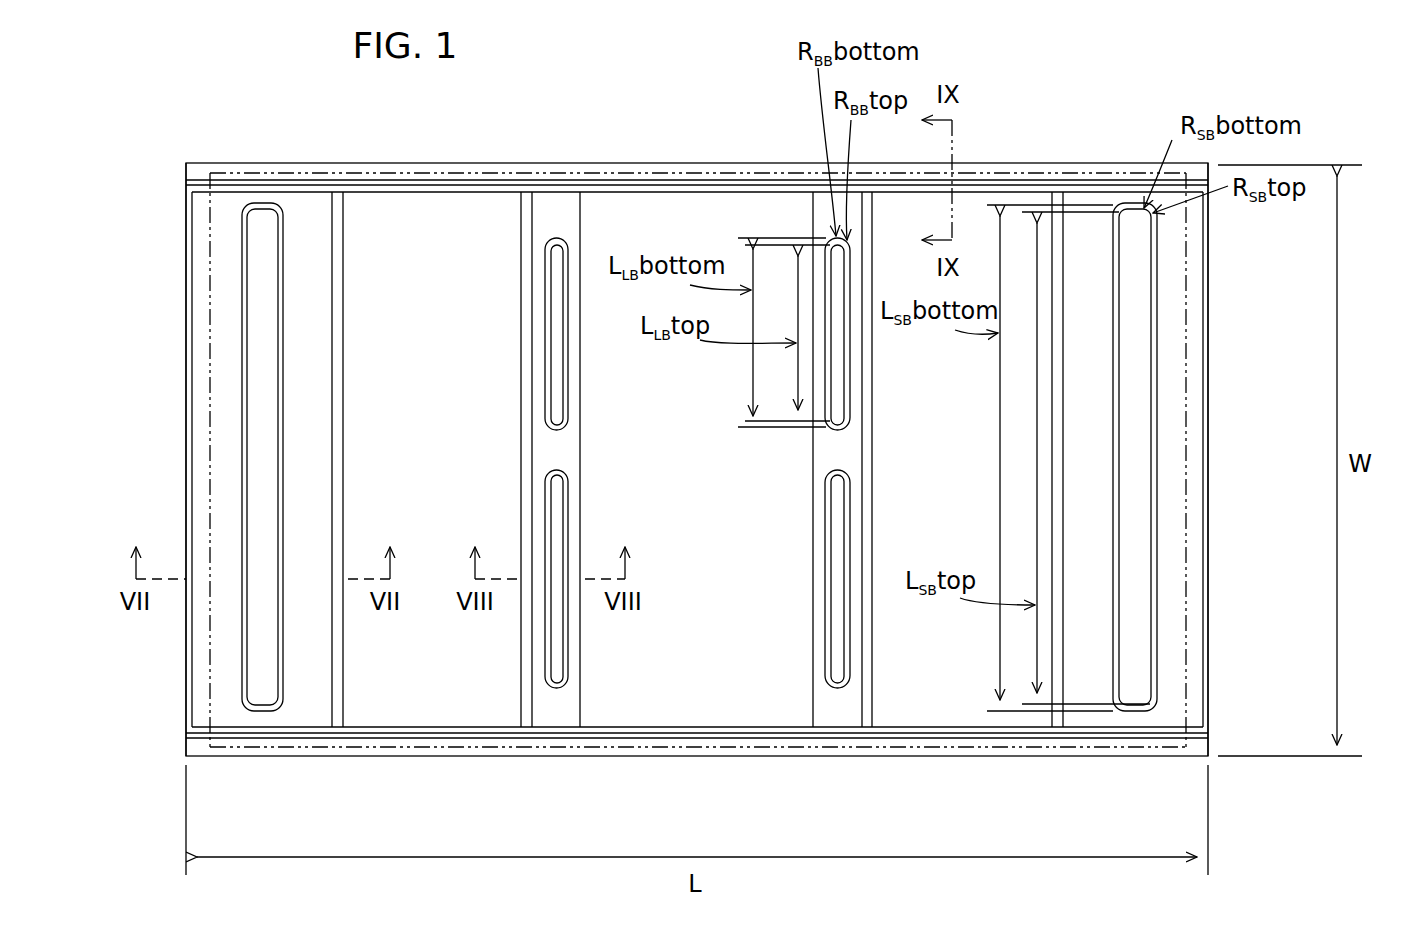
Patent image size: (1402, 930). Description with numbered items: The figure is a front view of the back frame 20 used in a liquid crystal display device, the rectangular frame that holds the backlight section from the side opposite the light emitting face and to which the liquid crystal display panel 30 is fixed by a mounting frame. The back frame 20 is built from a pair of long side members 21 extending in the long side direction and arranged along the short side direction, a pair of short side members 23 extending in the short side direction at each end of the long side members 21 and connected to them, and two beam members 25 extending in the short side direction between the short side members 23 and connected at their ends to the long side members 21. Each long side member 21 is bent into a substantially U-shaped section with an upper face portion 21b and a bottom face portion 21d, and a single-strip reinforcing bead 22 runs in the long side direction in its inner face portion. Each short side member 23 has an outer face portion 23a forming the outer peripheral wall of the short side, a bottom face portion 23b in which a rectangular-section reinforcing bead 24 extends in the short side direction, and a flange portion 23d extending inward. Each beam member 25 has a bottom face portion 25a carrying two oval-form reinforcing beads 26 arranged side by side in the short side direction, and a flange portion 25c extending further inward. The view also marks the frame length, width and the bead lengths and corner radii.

The back frame 20 is at (206, 84).
The long side member 21 is at (660, 164).
The upper face portion 21b is at (775, 176).
The bottom face portion 21d is at (468, 193).
The reinforcing bead 22 is at (629, 194).
The short side member 23 is at (184, 394).
The outer face portion 23a is at (192, 335).
The bottom face portion 23b is at (200, 458).
The flange portion 23d is at (343, 463).
The reinforcing bead 24 is at (263, 372).
The beam member 25 is at (704, 459).
The bottom face portion 25a is at (576, 500).
The flange portion 25c is at (522, 465).
The reinforcing bead 26 is at (557, 357).
The liquid crystal display panel 30 is at (1001, 170).